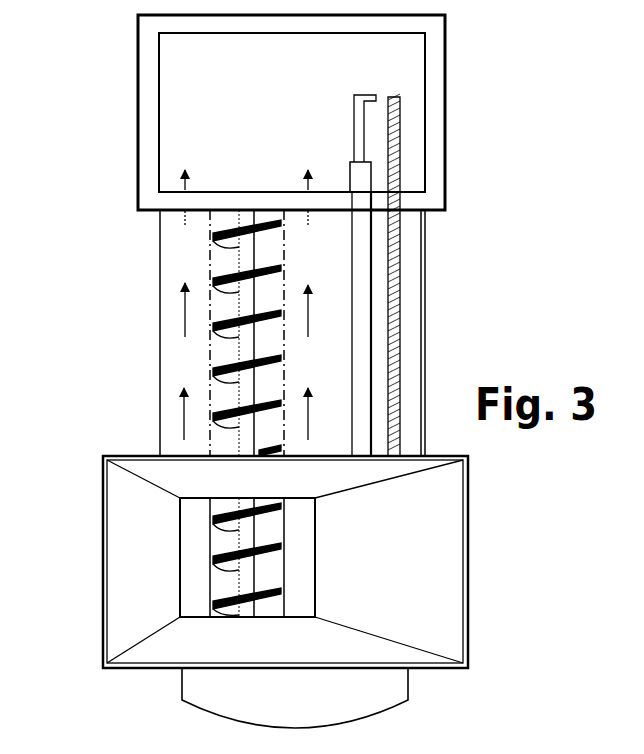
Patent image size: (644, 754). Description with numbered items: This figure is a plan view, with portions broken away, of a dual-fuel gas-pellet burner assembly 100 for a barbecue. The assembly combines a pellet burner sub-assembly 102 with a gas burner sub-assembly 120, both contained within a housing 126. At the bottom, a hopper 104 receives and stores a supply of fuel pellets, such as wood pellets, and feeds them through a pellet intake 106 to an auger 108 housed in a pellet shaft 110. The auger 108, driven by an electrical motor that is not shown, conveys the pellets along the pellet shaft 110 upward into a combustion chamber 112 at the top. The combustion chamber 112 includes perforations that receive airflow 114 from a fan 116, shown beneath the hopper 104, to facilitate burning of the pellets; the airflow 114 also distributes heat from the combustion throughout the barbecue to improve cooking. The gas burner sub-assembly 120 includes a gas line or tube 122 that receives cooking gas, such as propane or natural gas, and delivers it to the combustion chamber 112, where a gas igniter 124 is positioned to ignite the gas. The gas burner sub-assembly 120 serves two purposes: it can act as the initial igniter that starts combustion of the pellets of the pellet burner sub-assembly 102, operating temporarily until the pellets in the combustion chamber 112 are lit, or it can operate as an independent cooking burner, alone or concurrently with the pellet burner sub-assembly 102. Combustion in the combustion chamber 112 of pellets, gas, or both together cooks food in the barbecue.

The gas-pellet burner assembly 100 is at (76, 101).
The pellet burner sub-assembly 102 is at (196, 351).
The hopper 104 is at (468, 563).
The pellet intake 106 is at (297, 553).
The auger 108 is at (238, 584).
The pellet shaft 110 is at (210, 257).
The combustion chamber 112 is at (310, 128).
The airflow 114 is at (186, 180).
The fan 116 is at (375, 718).
The gas burner sub-assembly 120 is at (411, 118).
The gas line or tube 122 is at (396, 97).
The gas igniter 124 is at (352, 113).
The housing 126 is at (426, 340).